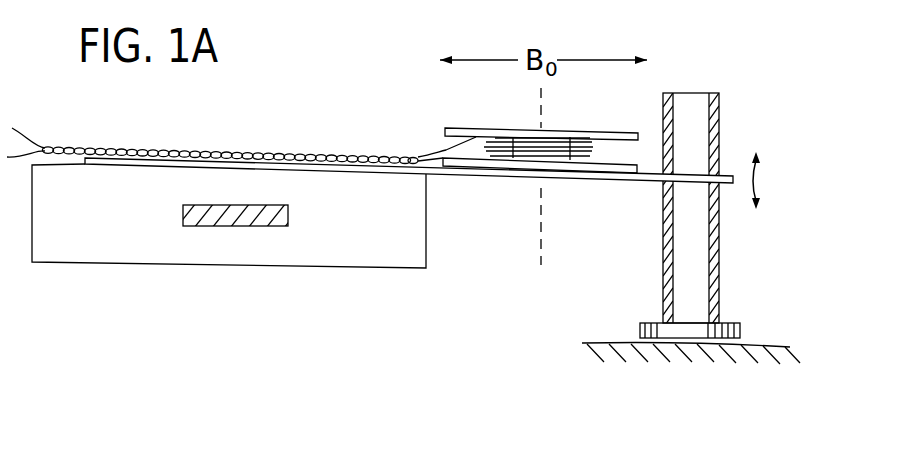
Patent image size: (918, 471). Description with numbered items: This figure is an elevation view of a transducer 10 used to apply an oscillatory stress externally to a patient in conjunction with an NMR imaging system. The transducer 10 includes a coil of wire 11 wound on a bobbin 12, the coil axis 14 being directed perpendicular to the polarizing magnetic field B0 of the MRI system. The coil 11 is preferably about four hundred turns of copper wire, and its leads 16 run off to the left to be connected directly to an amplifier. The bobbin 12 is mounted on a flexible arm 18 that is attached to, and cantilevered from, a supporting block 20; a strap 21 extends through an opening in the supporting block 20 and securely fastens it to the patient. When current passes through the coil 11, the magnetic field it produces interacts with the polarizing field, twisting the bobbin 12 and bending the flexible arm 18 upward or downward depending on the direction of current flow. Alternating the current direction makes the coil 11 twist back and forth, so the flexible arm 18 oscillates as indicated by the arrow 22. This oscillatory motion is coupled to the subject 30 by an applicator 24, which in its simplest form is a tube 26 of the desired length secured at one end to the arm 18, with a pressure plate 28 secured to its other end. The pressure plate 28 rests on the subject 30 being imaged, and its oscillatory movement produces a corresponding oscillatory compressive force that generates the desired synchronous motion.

The transducer 10 is at (451, 279).
The coil of wire 11 is at (606, 156).
The bobbin 12 is at (467, 128).
The coil axis 14 is at (537, 227).
The leads 16 is at (70, 148).
The flexible arm 18 is at (651, 182).
The supporting block 20 is at (105, 203).
The strap 21 is at (242, 228).
The arrow 22 is at (760, 185).
The applicator 24 is at (727, 197).
The tube 26 is at (720, 128).
The pressure plate 28 is at (655, 325).
The subject 30 is at (596, 340).